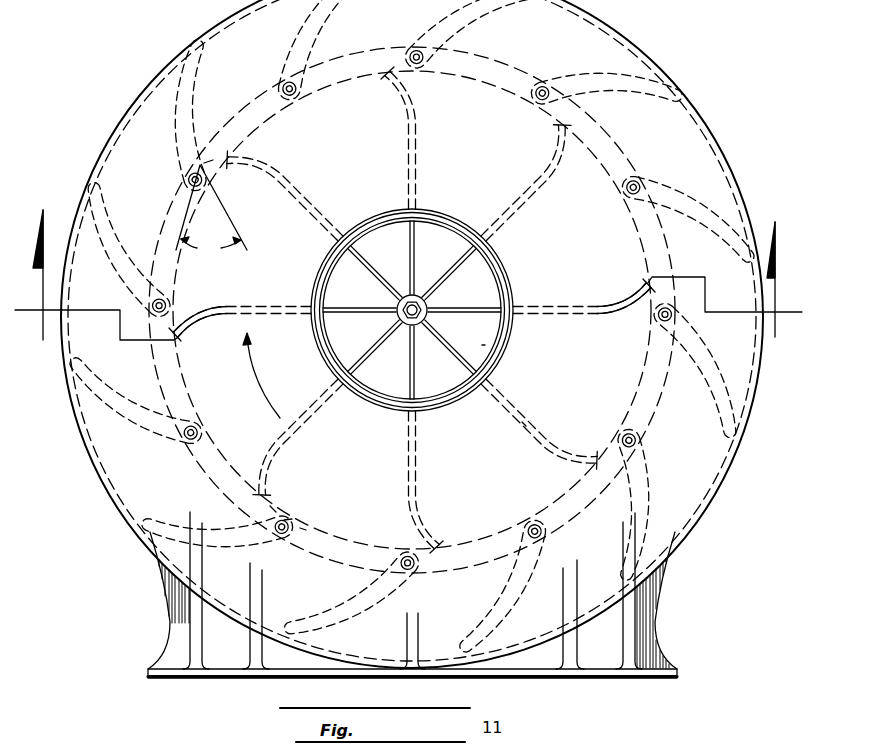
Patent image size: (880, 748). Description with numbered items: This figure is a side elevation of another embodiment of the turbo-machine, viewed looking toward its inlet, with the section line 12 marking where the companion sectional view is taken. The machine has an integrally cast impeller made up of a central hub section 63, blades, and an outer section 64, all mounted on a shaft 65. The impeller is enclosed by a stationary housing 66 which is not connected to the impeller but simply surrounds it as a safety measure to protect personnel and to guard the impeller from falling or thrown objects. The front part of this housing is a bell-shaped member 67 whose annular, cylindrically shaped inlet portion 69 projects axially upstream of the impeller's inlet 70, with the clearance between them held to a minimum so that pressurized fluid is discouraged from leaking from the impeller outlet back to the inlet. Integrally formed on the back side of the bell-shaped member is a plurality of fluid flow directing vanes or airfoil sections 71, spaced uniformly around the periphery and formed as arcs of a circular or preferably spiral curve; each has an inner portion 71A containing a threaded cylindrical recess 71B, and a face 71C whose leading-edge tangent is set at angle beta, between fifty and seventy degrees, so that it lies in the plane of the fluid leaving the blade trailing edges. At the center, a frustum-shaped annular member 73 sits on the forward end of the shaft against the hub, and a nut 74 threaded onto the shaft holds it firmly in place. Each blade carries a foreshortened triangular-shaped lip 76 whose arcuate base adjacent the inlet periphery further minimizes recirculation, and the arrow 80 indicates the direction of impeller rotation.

The section line 12- 12 is at (408, 276).
The hub section 63 is at (431, 300).
The outer section 64 is at (650, 245).
The shaft 65 is at (398, 308).
The stationary housing 66 is at (722, 488).
The bell-shaped member 67 is at (650, 50).
The cylindrically shaped inlet portion 69 is at (508, 276).
The impeller's inlet 70 is at (446, 217).
The airfoil section 71 is at (480, 2).
The inner portion 71A is at (302, 527).
The threaded cylindrical recess 71B is at (280, 513).
The face 71C is at (200, 166).
The frustum-shaped annular member 73 is at (421, 300).
The nut 74 is at (421, 318).
The triangular-shaped lip 76 is at (480, 270).
The direction of rotation 80 is at (264, 382).